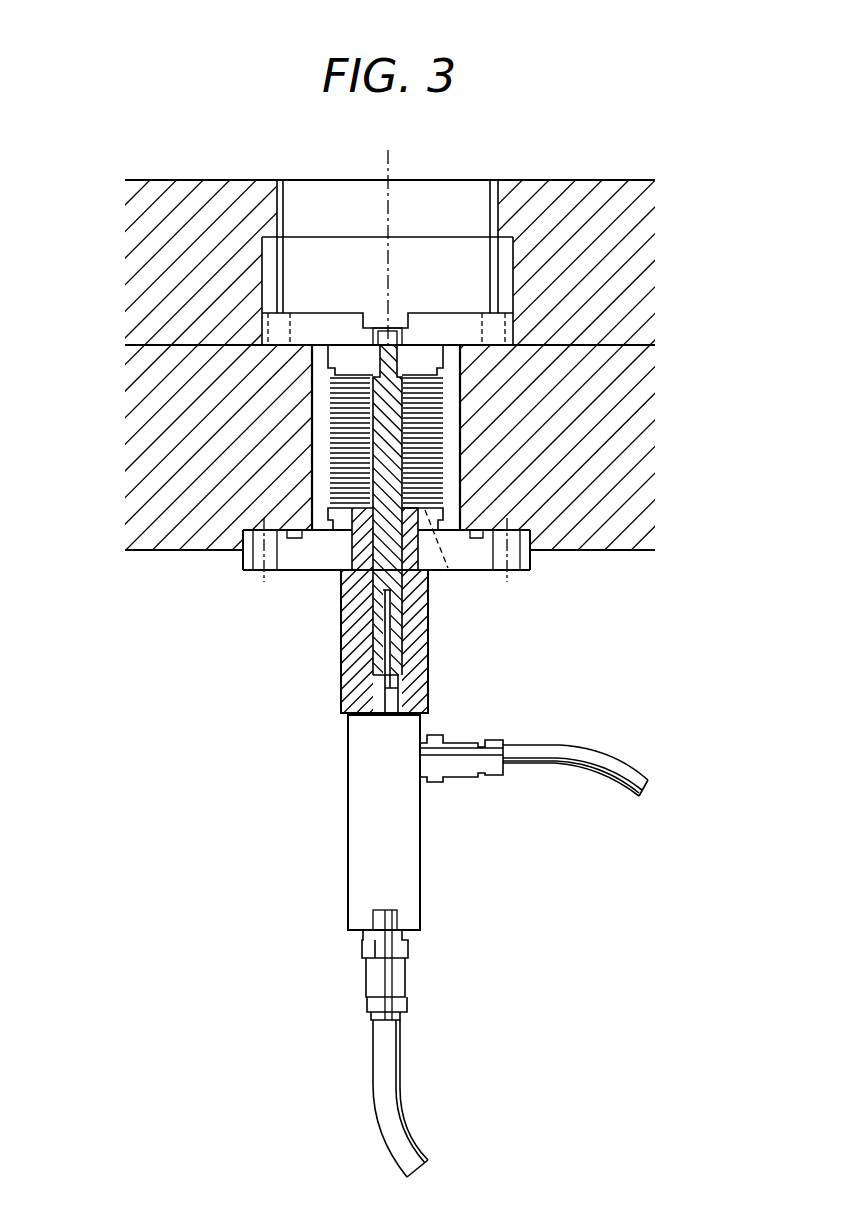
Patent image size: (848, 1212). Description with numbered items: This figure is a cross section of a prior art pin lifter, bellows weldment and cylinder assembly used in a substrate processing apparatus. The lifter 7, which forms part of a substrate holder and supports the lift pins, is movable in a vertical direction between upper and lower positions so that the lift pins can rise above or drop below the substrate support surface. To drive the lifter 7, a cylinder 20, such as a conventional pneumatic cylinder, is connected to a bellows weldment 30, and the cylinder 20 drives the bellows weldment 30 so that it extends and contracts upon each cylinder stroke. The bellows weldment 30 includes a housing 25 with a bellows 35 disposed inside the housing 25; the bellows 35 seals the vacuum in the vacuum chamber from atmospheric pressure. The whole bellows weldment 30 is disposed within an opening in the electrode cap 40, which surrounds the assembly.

The lifter 7 is at (440, 326).
The cylinder 20 is at (347, 806).
The housing 25 is at (462, 505).
The bellows weldment 30 is at (488, 487).
The bellows 35 is at (332, 408).
The electrode cap 40 is at (135, 253).